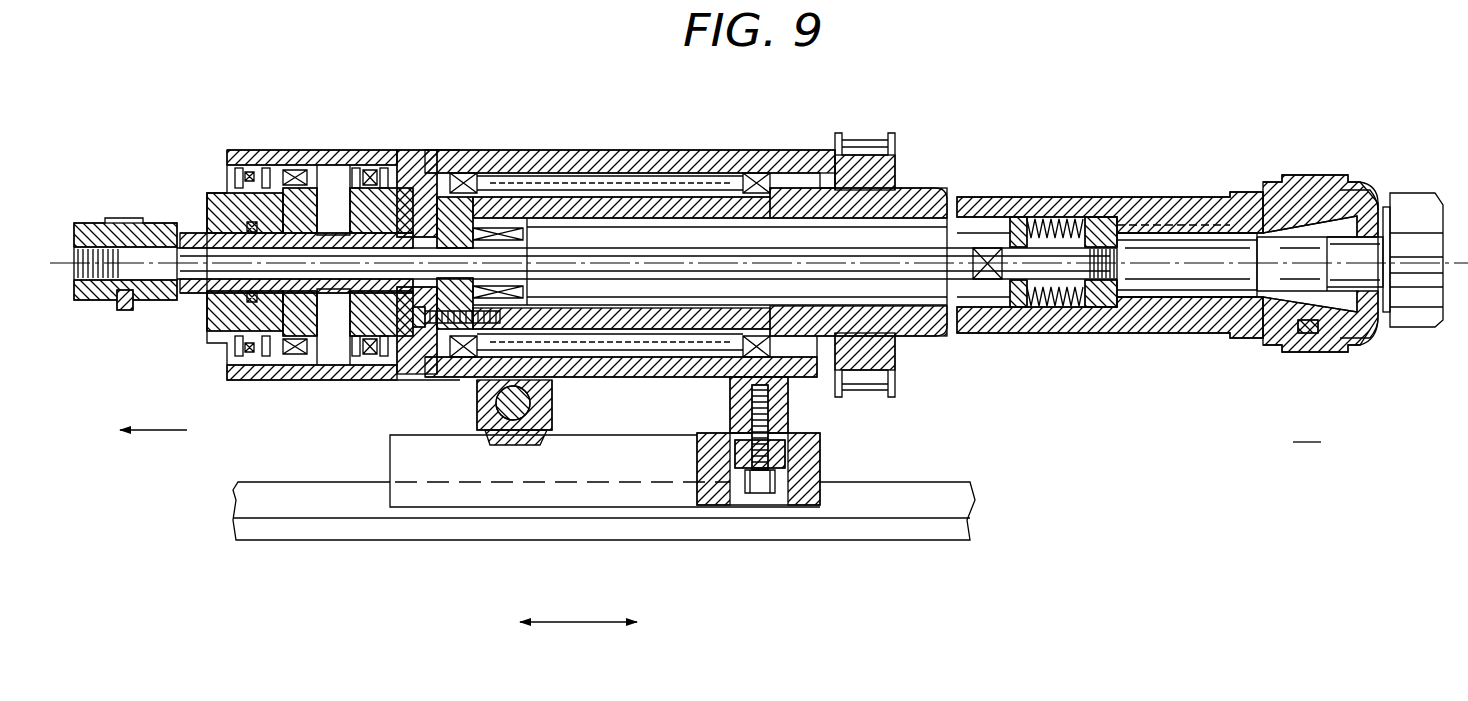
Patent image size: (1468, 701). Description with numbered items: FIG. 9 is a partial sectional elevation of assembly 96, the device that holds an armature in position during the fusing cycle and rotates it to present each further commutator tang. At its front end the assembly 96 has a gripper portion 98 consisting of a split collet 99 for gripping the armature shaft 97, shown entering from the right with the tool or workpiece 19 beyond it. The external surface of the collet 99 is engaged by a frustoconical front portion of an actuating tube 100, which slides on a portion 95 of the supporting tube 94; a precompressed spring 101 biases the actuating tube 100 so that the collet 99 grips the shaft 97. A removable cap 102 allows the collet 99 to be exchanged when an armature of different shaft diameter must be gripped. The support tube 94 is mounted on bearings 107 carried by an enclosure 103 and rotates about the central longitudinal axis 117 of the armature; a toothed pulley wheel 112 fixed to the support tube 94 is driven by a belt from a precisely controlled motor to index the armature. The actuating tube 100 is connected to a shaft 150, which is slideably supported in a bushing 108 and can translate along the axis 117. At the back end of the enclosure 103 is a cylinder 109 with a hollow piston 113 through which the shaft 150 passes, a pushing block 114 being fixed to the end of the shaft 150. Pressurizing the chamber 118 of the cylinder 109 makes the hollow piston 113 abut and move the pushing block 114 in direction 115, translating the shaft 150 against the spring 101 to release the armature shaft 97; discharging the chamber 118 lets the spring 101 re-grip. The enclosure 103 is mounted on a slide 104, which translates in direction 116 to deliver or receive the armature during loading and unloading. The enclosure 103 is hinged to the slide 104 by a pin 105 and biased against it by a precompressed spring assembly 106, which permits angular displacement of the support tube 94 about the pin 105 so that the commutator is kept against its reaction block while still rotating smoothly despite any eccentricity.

The tool 19 is at (1420, 197).
The supporting tube 94 is at (1177, 327).
The portion of supporting tube 95 is at (1117, 317).
The assembly 96 is at (1307, 430).
The armature shaft 97 is at (1363, 273).
The gripper portion 98 is at (1373, 173).
The split collet 99 is at (1320, 227).
The actuating tube 100 is at (1170, 215).
The precompressed spring 101 is at (1047, 303).
The removable cap 102 is at (1370, 200).
The enclosure 103 is at (627, 158).
The slide 104 is at (467, 497).
The pin 105 is at (532, 412).
The precompressed spring assembly 106 is at (797, 415).
The bearings 107 is at (462, 177).
The bushing 108 is at (510, 228).
The cylinder 109 is at (365, 156).
The toothed pulley wheel 112 is at (887, 172).
The hollow piston 113 is at (290, 203).
The pushing block 114 is at (122, 223).
The direction 115 is at (152, 430).
The direction 116 is at (595, 622).
The central longitudinal axis 117 is at (1127, 223).
The chamber 118 is at (330, 350).
The shaft 150 is at (202, 270).